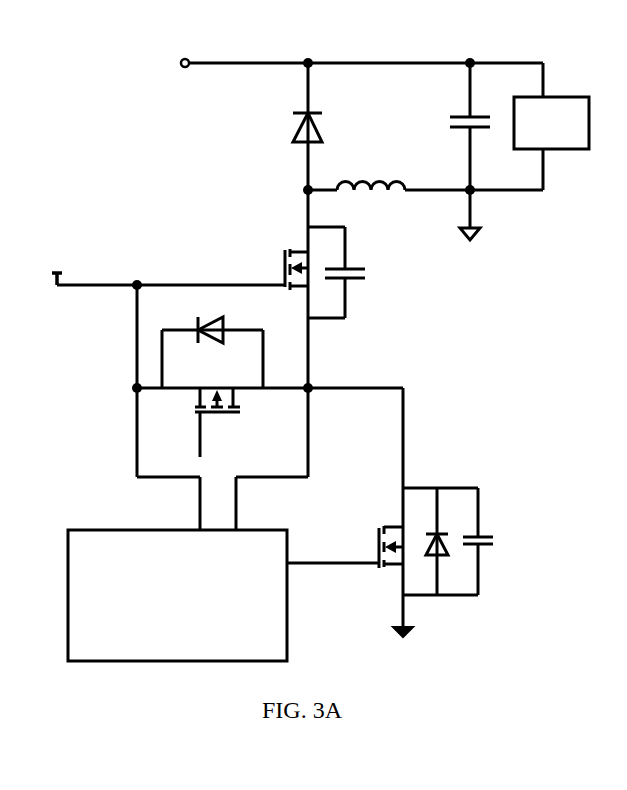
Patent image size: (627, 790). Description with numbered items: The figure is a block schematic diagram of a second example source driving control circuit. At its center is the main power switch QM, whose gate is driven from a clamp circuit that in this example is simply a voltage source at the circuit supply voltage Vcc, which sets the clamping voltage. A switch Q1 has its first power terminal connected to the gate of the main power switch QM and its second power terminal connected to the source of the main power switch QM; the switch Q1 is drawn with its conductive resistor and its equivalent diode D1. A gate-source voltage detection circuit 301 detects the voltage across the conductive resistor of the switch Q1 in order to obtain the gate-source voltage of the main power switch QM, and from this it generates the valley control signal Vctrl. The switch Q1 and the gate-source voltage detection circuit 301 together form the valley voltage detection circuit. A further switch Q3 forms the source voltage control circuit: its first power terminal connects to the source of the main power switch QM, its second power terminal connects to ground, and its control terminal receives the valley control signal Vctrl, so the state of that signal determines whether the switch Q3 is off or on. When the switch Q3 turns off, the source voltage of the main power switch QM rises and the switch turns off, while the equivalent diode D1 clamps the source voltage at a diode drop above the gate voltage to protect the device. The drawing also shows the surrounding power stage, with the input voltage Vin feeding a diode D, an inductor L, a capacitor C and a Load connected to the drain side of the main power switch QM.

The gate-source voltage detection circuit 301 is at (177, 595).
The main power switch QM is at (302, 247).
The switch Q1 is at (204, 416).
The switch Q3 is at (389, 524).
The diode D is at (297, 143).
The equivalent diode D1 is at (234, 325).
The inductor L is at (377, 191).
The capacitor C is at (462, 130).
The load Load is at (551, 123).
The input voltage Vin is at (167, 62).
The circuit supply voltage Vcc is at (62, 260).
The valley control signal Vctrl is at (317, 565).